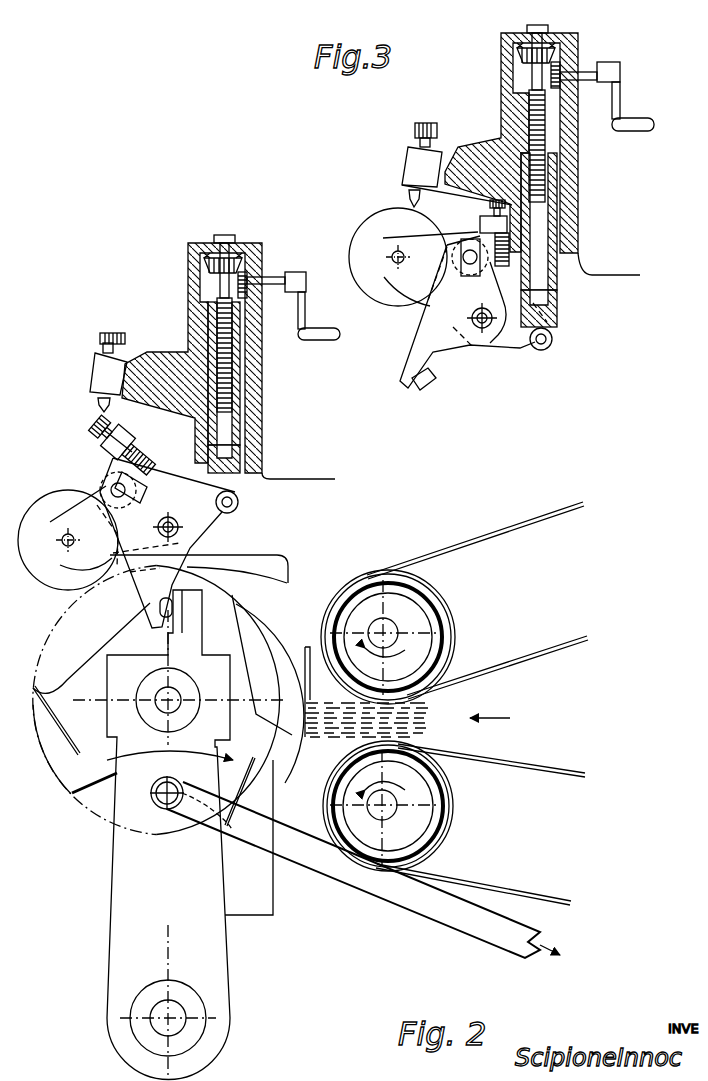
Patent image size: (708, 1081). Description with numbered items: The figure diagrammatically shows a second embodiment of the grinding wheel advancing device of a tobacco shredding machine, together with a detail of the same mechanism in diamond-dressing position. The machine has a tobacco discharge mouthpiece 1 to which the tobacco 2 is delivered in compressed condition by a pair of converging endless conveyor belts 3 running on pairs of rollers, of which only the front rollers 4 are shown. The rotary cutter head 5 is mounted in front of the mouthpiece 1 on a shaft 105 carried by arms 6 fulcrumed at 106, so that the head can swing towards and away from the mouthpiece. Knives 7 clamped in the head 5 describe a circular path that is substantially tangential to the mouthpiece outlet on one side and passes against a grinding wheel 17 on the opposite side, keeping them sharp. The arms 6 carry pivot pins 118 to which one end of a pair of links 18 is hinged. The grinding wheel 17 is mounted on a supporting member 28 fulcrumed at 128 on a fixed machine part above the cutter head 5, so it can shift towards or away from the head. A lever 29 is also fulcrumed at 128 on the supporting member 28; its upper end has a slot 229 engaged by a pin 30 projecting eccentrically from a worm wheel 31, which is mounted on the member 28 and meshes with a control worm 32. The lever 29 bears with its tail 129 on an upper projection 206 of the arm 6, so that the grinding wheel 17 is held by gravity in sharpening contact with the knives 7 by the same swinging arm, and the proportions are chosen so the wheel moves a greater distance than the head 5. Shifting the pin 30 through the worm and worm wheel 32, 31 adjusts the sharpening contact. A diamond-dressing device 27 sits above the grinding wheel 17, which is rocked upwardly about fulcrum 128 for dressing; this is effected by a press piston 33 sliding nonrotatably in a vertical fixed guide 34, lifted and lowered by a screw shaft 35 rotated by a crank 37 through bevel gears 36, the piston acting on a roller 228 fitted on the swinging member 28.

In FIG. 2, the tobacco discharge mouthpiece 1 is at (303, 687).
In FIG. 2, the tobacco 2 is at (430, 728).
In FIG. 2, the endless conveyor belts 3 is at (523, 658).
In FIG. 2, the front rollers 4 is at (435, 602).
In FIG. 2, the rotary cutter head 5 is at (77, 793).
In FIG. 2, the arms 6 is at (128, 887).
In FIG. 2, the knives 7 is at (62, 732).
In FIG. 3, the grinding wheel 17 is at (367, 228).
In FIG. 2, the grinding wheel 17 is at (34, 565).
In FIG. 2, the links 18 is at (413, 903).
In FIG. 3, the diamond-dressing device 27 is at (413, 153).
In FIG. 2, the diamond-dressing device 27 is at (100, 364).
In FIG. 3, the supporting member 28 is at (408, 293).
In FIG. 2, the supporting member 28 is at (66, 512).
In FIG. 3, the lever 29 is at (450, 349).
In FIG. 2, the lever 29 is at (113, 542).
In FIG. 3, the pin 30 is at (463, 258).
In FIG. 2, the pin 30 is at (115, 497).
In FIG. 3, the worm wheel 31 is at (467, 232).
In FIG. 2, the worm wheel 31 is at (113, 487).
In FIG. 3, the control worm 32 is at (503, 270).
In FIG. 2, the control worm 32 is at (140, 463).
In FIG. 3, the press piston 33 is at (558, 305).
In FIG. 2, the press piston 33 is at (234, 452).
In FIG. 3, the vertical fixed guide 34 is at (580, 202).
In FIG. 2, the vertical fixed guide 34 is at (262, 402).
In FIG. 3, the screw shaft 35 is at (531, 110).
In FIG. 2, the screw shaft 35 is at (231, 363).
In FIG. 3, the bevel gears 36 is at (524, 56).
In FIG. 2, the bevel gears 36 is at (204, 265).
In FIG. 3, the crank 37 is at (637, 131).
In FIG. 2, the crank 37 is at (320, 327).
In FIG. 2, the shaft 105 is at (163, 697).
In FIG. 2, the fulcrum 106 is at (178, 1025).
In FIG. 2, the pivot pins 118 is at (167, 810).
In FIG. 3, the fulcrum 128 is at (482, 330).
In FIG. 2, the fulcrum 128 is at (176, 528).
In FIG. 3, the tail 129 is at (403, 384).
In FIG. 2, the tail 129 is at (152, 607).
In FIG. 2, the upper projection 206 is at (197, 607).
In FIG. 3, the roller 228 is at (551, 348).
In FIG. 2, the roller 228 is at (240, 502).
In FIG. 3, the slot 229 is at (467, 280).
In FIG. 2, the slot 229 is at (148, 500).